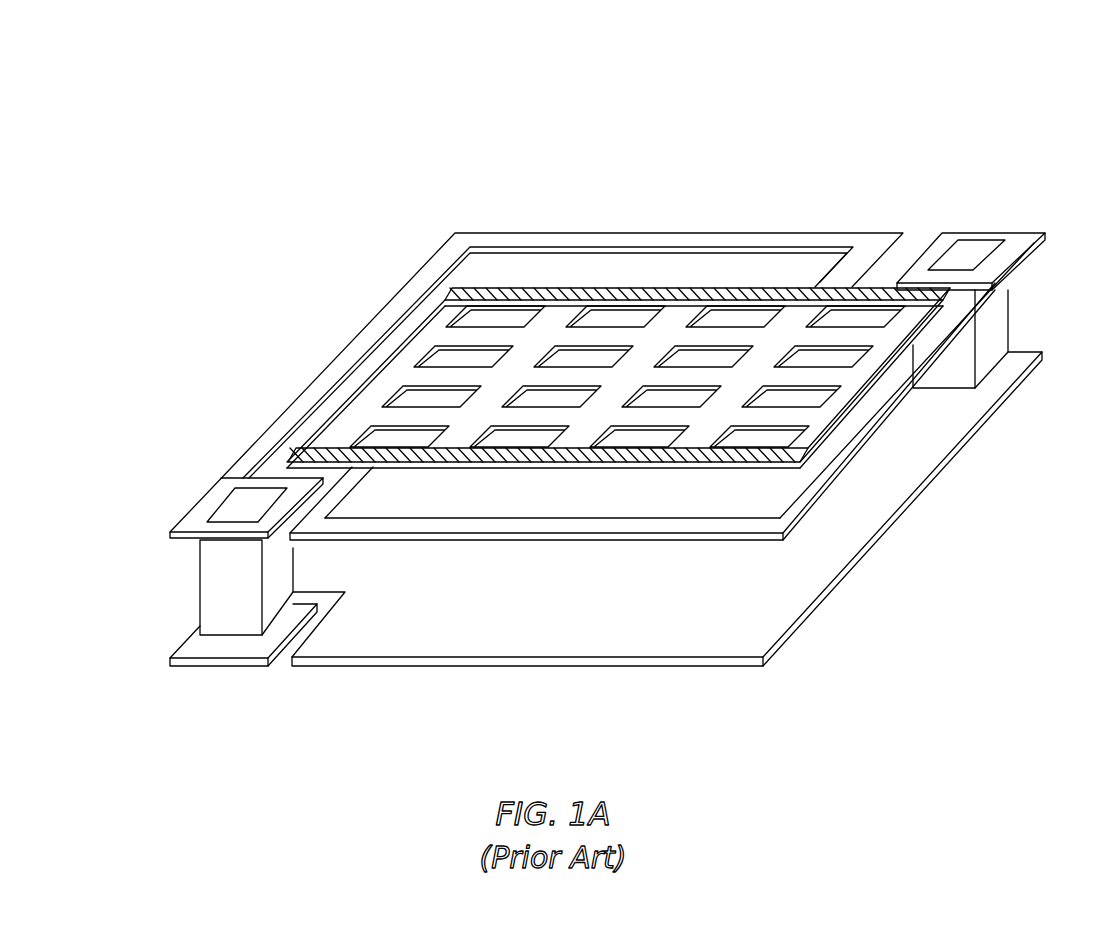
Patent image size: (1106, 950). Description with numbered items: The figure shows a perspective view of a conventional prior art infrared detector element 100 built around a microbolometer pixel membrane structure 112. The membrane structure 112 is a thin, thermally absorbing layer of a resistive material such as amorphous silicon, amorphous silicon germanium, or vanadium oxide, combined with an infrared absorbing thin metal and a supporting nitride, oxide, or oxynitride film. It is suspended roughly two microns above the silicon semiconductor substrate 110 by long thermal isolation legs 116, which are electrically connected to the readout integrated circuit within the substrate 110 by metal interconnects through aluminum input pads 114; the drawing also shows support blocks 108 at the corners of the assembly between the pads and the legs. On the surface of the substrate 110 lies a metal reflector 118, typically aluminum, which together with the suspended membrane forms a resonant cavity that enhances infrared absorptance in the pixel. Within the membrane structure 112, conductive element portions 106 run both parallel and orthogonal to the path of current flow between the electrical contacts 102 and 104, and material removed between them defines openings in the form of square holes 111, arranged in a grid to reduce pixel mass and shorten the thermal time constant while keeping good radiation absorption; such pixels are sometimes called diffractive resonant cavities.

The infrared detector element 100 is at (927, 98).
The electrical contact 102 is at (642, 296).
The electrical contact 104 is at (618, 427).
The conductive element portions 106 is at (447, 337).
The support block 108 is at (200, 586).
The silicon semiconductor substrate 110 is at (377, 666).
The square holes 111 is at (603, 307).
The microbolometer pixel membrane structure 112 is at (882, 288).
The aluminum input pads 114 is at (190, 646).
The thermal isolation legs 116 is at (292, 417).
The metal reflector 118 is at (513, 623).